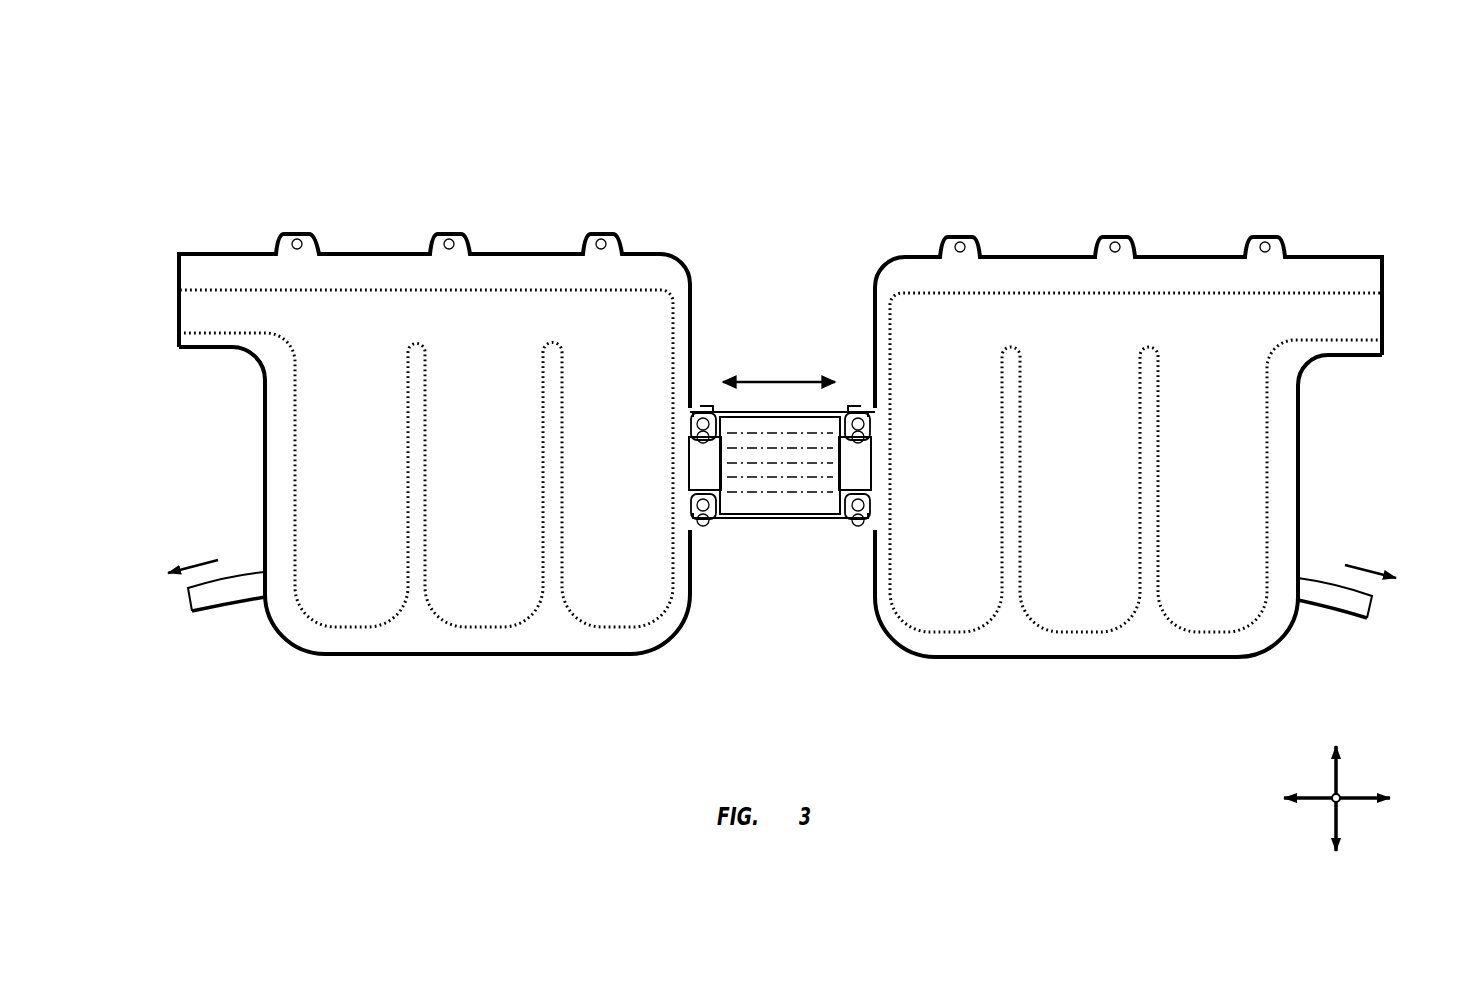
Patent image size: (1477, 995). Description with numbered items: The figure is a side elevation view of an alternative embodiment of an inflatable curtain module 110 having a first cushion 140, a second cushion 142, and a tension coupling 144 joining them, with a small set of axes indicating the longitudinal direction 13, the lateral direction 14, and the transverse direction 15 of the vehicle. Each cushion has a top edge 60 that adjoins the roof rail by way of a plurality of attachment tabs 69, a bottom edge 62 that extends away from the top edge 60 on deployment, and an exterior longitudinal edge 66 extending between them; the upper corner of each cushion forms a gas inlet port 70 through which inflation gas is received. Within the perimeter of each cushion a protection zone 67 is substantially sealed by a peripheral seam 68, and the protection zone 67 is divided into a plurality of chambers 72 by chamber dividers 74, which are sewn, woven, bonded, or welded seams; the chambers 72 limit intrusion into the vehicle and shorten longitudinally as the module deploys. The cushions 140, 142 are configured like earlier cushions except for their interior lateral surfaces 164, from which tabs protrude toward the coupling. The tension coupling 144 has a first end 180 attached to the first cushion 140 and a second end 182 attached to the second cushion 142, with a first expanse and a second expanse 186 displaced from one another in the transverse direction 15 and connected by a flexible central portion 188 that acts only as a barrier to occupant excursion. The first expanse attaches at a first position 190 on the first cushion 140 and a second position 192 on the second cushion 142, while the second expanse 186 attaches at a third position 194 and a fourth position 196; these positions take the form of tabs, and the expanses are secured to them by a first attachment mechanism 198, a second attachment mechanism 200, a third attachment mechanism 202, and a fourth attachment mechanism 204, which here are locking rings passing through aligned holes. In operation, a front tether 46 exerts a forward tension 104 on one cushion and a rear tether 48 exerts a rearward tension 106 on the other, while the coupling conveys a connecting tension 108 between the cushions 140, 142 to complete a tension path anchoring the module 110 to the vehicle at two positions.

The inflatable curtain module 110 is at (858, 135).
The first cushion 140 is at (420, 156).
The second cushion 142 is at (1125, 158).
The connecting tension 108 is at (777, 380).
The tension coupling 144 is at (752, 328).
The top edge 60 is at (530, 272).
The bottom edge 62 is at (455, 640).
The exterior longitudinal edge 66 is at (265, 428).
The protection zone 67 is at (465, 406).
The peripheral seam 68 is at (445, 295).
The attachment tabs 69 is at (290, 240).
The gas inlet port 70 is at (188, 305).
The chambers 72 is at (340, 475).
The chamber dividers 74 is at (425, 548).
The front tether 46 is at (222, 600).
The rear tether 48 is at (1340, 614).
The forward tension 104 is at (1362, 565).
The rearward tension 106 is at (205, 560).
The interior lateral surface 164 is at (672, 612).
The first end 180 is at (708, 540).
The second end 182 is at (858, 540).
The second expanse 186 is at (780, 507).
The flexible central portion 188 is at (787, 425).
The first position (tab) 190 is at (703, 404).
The second position (tab) 192 is at (858, 404).
The third position (tab) 194 is at (692, 520).
The fourth position (tab) 196 is at (872, 475).
The first attachment mechanism 198 is at (692, 440).
The second attachment mechanism 200 is at (878, 440).
The third attachment mechanism 202 is at (700, 530).
The fourth attachment mechanism 204 is at (872, 520).
The longitudinal direction 13 is at (1352, 801).
The lateral direction 14 is at (1339, 794).
The transverse direction 15 is at (1334, 772).